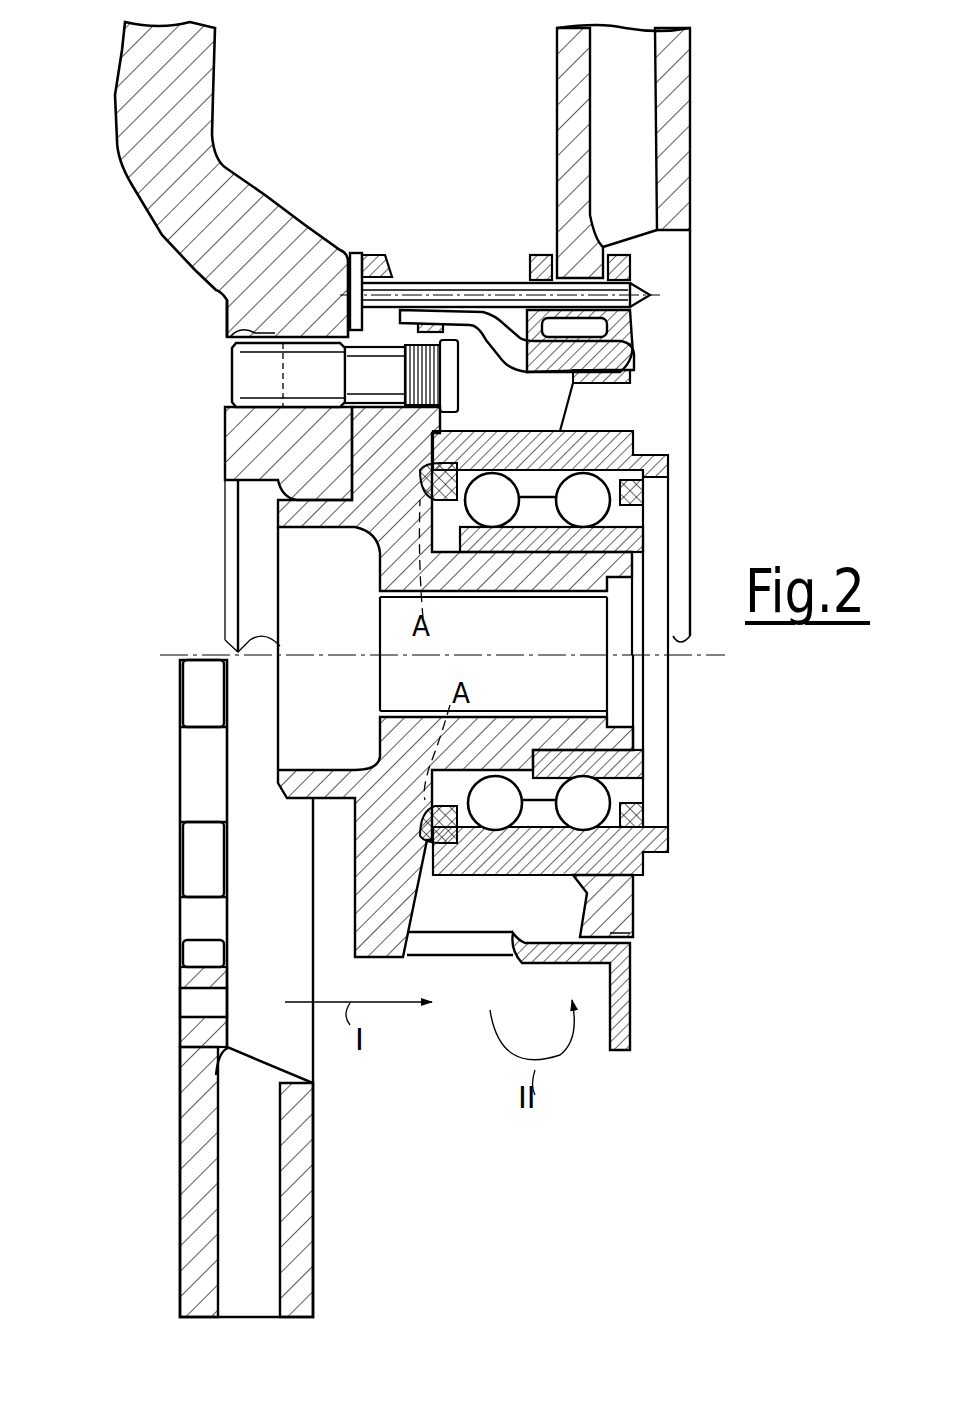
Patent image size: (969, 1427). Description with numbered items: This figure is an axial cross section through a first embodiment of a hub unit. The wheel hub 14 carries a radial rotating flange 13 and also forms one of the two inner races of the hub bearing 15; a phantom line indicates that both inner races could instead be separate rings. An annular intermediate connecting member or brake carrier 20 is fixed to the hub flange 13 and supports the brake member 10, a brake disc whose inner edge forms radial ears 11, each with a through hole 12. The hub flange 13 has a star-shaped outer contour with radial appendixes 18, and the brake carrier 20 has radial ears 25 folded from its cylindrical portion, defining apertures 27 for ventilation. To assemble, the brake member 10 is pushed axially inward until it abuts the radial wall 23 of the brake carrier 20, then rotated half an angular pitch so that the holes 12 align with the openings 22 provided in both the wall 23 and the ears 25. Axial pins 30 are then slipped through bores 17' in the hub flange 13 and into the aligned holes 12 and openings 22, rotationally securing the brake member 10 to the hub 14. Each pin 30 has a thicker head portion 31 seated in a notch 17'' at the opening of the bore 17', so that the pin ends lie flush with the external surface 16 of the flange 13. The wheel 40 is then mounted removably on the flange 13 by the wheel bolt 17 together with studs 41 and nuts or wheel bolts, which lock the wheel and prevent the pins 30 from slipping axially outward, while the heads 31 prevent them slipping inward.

The brake member 10 is at (570, 112).
The radial ears 11 is at (190, 955).
The through hole 12 is at (193, 1003).
The hub flange 13 is at (385, 878).
The wheel hub 14 is at (272, 596).
The hub bearing 15 is at (622, 770).
The external surface 16 is at (353, 253).
The wheel bolt 17 is at (312, 376).
The bores 17' is at (221, 334).
The notches 17'' is at (187, 308).
The radial appendixes 18 is at (378, 258).
The intermediate connecting member 20 is at (637, 350).
The openings 22 is at (522, 325).
The radial wall 23 is at (632, 258).
The radial ears 25 is at (533, 258).
The apertures 27 is at (487, 347).
The axial pins 30 is at (457, 285).
The thicker head portion 31 is at (430, 313).
The wheel 40 is at (145, 120).
The studs 41 is at (366, 528).